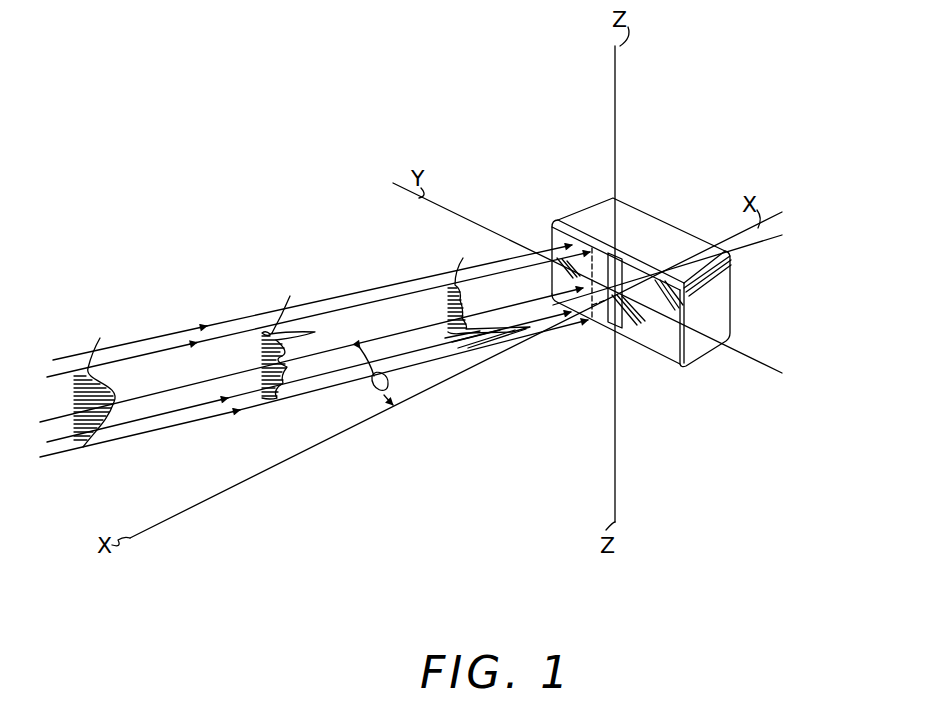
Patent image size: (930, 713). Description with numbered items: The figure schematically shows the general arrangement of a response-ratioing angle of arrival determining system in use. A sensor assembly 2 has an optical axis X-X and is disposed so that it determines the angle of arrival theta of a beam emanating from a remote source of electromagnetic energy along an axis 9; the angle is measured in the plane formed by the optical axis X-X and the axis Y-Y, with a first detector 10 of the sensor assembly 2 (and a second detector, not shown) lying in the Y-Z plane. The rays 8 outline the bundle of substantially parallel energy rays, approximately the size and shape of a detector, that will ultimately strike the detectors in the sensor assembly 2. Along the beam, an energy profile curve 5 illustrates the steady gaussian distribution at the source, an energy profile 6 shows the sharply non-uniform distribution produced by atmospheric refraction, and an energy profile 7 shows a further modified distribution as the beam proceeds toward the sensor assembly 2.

The sensor assembly 2 is at (665, 230).
The energy profile curve 5 is at (312, 346).
The energy profile 6 is at (288, 337).
The energy profile 7 is at (487, 292).
The rays 8 is at (371, 298).
The axis 9 is at (187, 387).
The first detector 10 is at (612, 318).